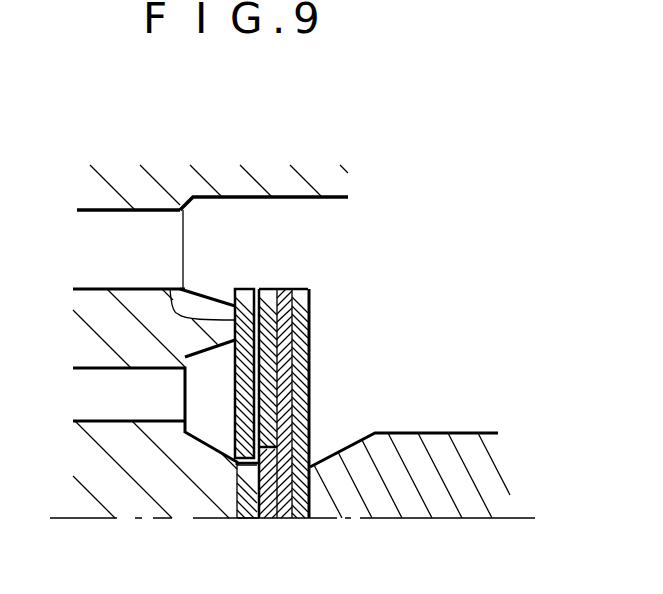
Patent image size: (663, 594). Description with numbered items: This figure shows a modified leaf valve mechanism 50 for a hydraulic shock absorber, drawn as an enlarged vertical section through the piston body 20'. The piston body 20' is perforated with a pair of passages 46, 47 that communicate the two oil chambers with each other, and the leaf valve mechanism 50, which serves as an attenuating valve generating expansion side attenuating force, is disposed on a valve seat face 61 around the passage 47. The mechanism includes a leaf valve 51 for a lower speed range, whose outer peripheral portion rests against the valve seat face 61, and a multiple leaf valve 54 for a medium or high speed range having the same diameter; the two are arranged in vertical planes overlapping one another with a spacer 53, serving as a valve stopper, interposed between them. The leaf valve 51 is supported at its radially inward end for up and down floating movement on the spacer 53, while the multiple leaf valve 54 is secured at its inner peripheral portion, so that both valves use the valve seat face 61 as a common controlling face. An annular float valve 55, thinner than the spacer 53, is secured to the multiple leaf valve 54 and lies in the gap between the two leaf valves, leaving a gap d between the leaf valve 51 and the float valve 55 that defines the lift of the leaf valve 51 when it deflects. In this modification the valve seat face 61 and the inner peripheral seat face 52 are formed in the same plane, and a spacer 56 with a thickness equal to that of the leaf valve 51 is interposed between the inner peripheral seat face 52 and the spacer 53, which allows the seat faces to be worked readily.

The passage 46 is at (98, 222).
The piston body 20' is at (264, 156).
The valve seat face 61 is at (173, 287).
The leaf valve 51 is at (245, 287).
The gap d is at (257, 287).
The annular float valve 55 is at (266, 287).
The multiple leaf valve 54 is at (283, 327).
The spacer 53 is at (267, 519).
The inner peripheral seat face 52 is at (232, 497).
The spacer 56 is at (243, 519).
The leaf valve mechanism 50 is at (305, 521).
The passage 47 is at (105, 407).